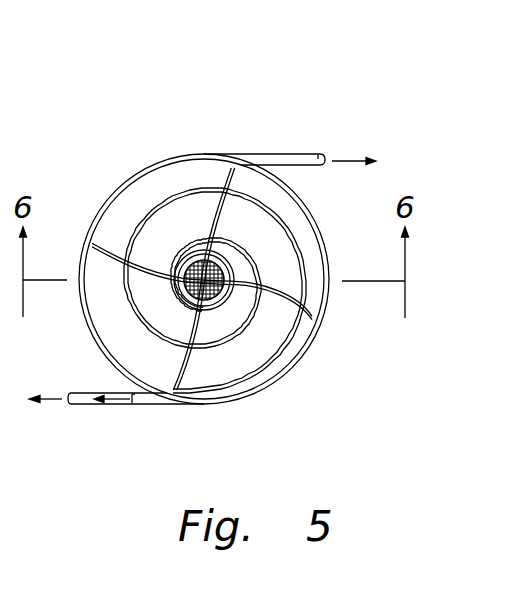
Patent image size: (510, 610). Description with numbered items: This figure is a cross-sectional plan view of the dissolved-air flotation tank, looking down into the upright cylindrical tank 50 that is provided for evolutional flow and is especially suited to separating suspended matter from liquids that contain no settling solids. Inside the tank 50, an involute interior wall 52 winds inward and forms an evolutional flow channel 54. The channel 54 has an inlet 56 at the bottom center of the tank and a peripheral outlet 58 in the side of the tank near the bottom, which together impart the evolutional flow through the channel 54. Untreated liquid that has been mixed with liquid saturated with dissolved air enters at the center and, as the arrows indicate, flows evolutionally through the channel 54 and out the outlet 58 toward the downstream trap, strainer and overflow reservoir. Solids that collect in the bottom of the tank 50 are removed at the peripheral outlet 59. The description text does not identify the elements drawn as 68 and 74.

The upright cylindrical tank 50 is at (157, 154).
The involute interior wall 52 is at (283, 223).
The evolutional flow channel 54 is at (108, 325).
The inlet 56 is at (180, 344).
The peripheral outlet 58 is at (150, 406).
The peripheral outlet 59 is at (87, 406).
The curved vane 68 is at (311, 316).
The top outlet pipe 74 is at (299, 152).